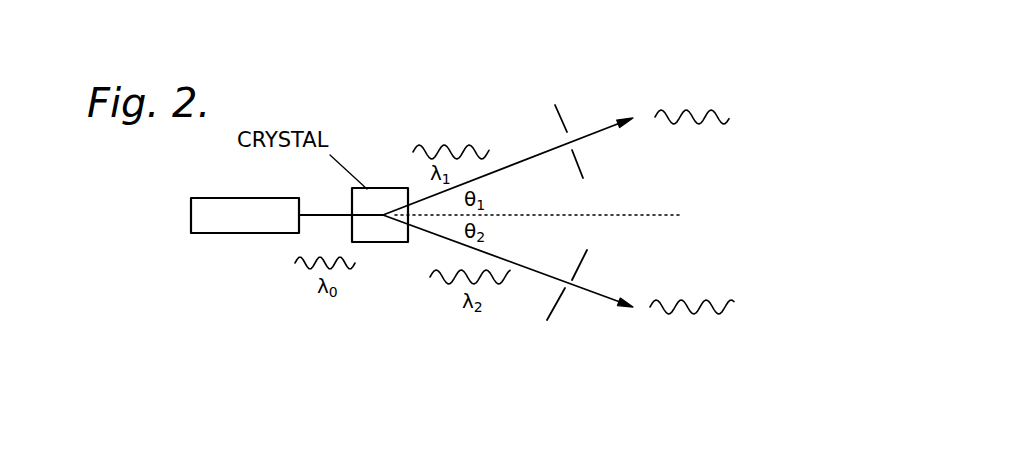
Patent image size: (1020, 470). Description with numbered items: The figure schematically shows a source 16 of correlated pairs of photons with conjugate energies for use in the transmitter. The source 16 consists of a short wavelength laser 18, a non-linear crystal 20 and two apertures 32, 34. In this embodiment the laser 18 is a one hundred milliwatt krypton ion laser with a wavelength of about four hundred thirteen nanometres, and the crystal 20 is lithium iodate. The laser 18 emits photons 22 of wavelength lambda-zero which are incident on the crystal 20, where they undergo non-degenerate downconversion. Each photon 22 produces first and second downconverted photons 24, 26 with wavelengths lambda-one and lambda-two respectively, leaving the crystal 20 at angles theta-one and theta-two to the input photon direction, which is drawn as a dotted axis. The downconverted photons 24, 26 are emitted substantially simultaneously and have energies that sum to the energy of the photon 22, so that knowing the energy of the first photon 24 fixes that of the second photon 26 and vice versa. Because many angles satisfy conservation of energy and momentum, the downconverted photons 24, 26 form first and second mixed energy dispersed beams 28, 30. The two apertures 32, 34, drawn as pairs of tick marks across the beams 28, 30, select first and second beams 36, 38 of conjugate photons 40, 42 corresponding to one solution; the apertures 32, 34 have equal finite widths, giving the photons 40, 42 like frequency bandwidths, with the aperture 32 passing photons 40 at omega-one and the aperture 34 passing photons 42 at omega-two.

The source 16 is at (172, 202).
The laser 18 is at (233, 233).
The non-linear crystal 20 is at (372, 188).
The photons 22 is at (307, 270).
The first downconverted photon 24 is at (427, 148).
The second downconverted photon 26 is at (445, 281).
The first mixed energy dispersed beam 28 is at (522, 160).
The second mixed energy dispersed beam 30 is at (540, 278).
The aperture 32 is at (565, 125).
The aperture 34 is at (560, 307).
The first beam 36 is at (607, 130).
The second beam 38 is at (600, 290).
The photons 40 is at (712, 112).
The photons 42 is at (683, 310).